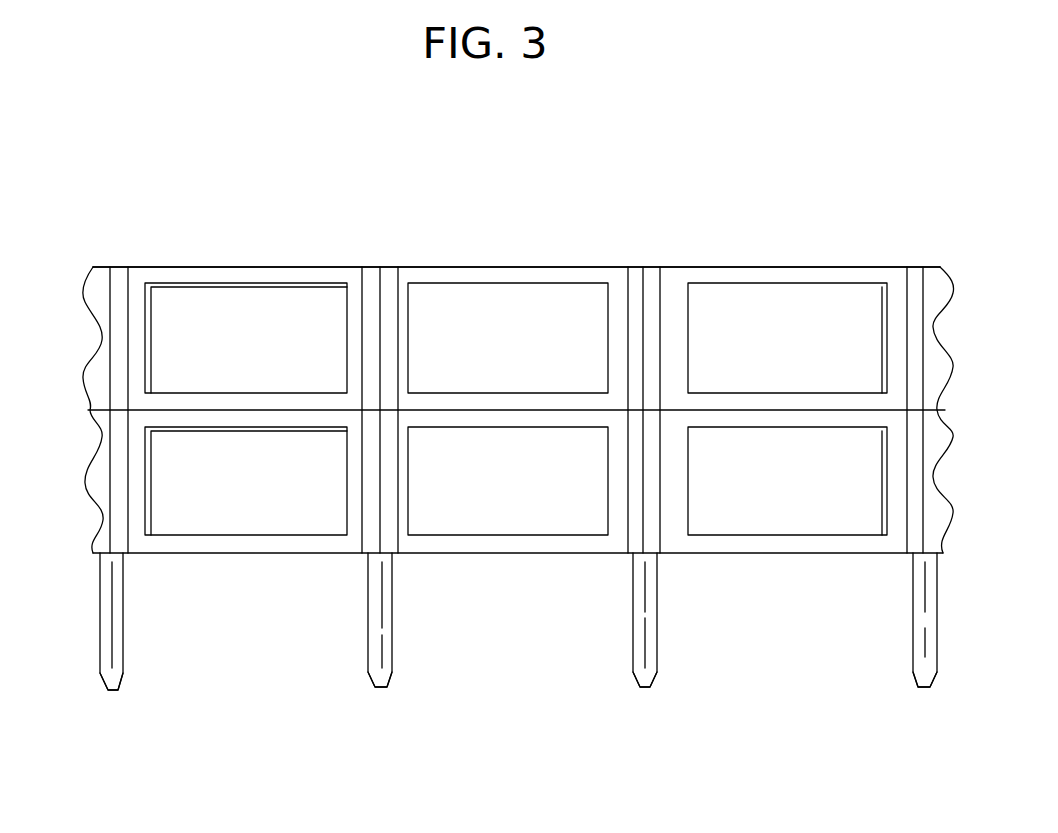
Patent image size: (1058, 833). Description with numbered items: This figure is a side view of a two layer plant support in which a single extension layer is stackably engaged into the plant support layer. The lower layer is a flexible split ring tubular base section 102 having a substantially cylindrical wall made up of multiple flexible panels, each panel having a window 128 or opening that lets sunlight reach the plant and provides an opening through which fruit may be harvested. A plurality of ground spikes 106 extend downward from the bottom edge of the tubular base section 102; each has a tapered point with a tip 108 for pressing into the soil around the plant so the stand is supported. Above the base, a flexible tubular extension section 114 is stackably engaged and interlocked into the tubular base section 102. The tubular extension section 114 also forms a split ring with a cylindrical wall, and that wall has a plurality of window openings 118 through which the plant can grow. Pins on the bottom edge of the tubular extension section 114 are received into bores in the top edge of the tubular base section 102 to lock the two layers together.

The tubular base section 102 is at (222, 546).
The ground spikes 106 is at (108, 623).
The terminal tail end 108 is at (112, 682).
The tubular extension section 114 is at (580, 266).
The window openings 118 is at (213, 357).
The window 128 is at (213, 493).